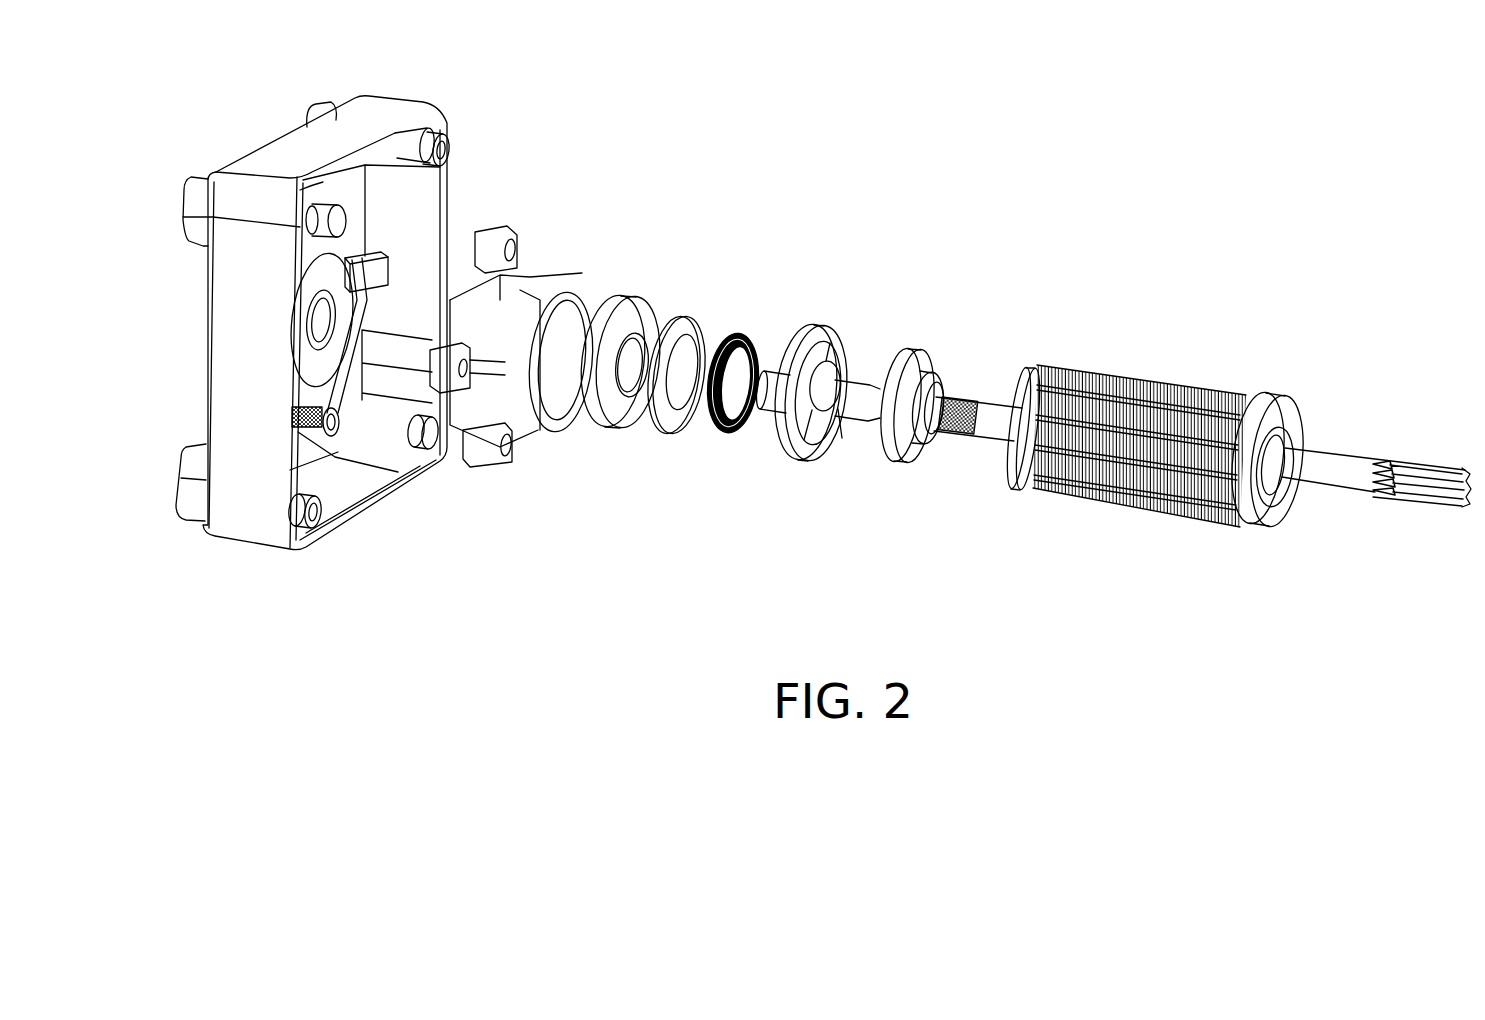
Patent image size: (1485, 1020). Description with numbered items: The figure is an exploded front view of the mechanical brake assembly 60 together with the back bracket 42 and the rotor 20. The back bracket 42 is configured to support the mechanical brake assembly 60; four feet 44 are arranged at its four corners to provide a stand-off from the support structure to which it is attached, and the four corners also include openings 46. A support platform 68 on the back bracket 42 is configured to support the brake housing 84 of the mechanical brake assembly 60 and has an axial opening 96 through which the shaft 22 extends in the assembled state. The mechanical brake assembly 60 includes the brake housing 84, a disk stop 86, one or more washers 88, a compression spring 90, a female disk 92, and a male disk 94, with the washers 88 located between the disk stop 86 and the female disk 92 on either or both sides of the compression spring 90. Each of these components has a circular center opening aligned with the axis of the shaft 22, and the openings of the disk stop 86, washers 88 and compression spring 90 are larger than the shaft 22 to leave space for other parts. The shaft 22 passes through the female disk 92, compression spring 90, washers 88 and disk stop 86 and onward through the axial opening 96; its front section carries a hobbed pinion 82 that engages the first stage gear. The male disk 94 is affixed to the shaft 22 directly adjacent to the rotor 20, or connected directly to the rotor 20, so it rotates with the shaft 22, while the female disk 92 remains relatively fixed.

The rotor 20 is at (1127, 502).
The shaft 22 is at (857, 387).
The back bracket 42 is at (385, 115).
The feet 44 is at (181, 487).
The openings 46 is at (450, 147).
The mechanical brake assembly 60 is at (622, 540).
The support platform 68 is at (327, 278).
The hobbed pinion 82 is at (1417, 500).
The brake housing 84 is at (552, 275).
The disk stop 86 is at (626, 425).
The washers 88 is at (687, 327).
The compression spring 90 is at (750, 330).
The female disk 92 is at (786, 447).
The male disk 94 is at (903, 357).
The axial opening 96 is at (333, 337).